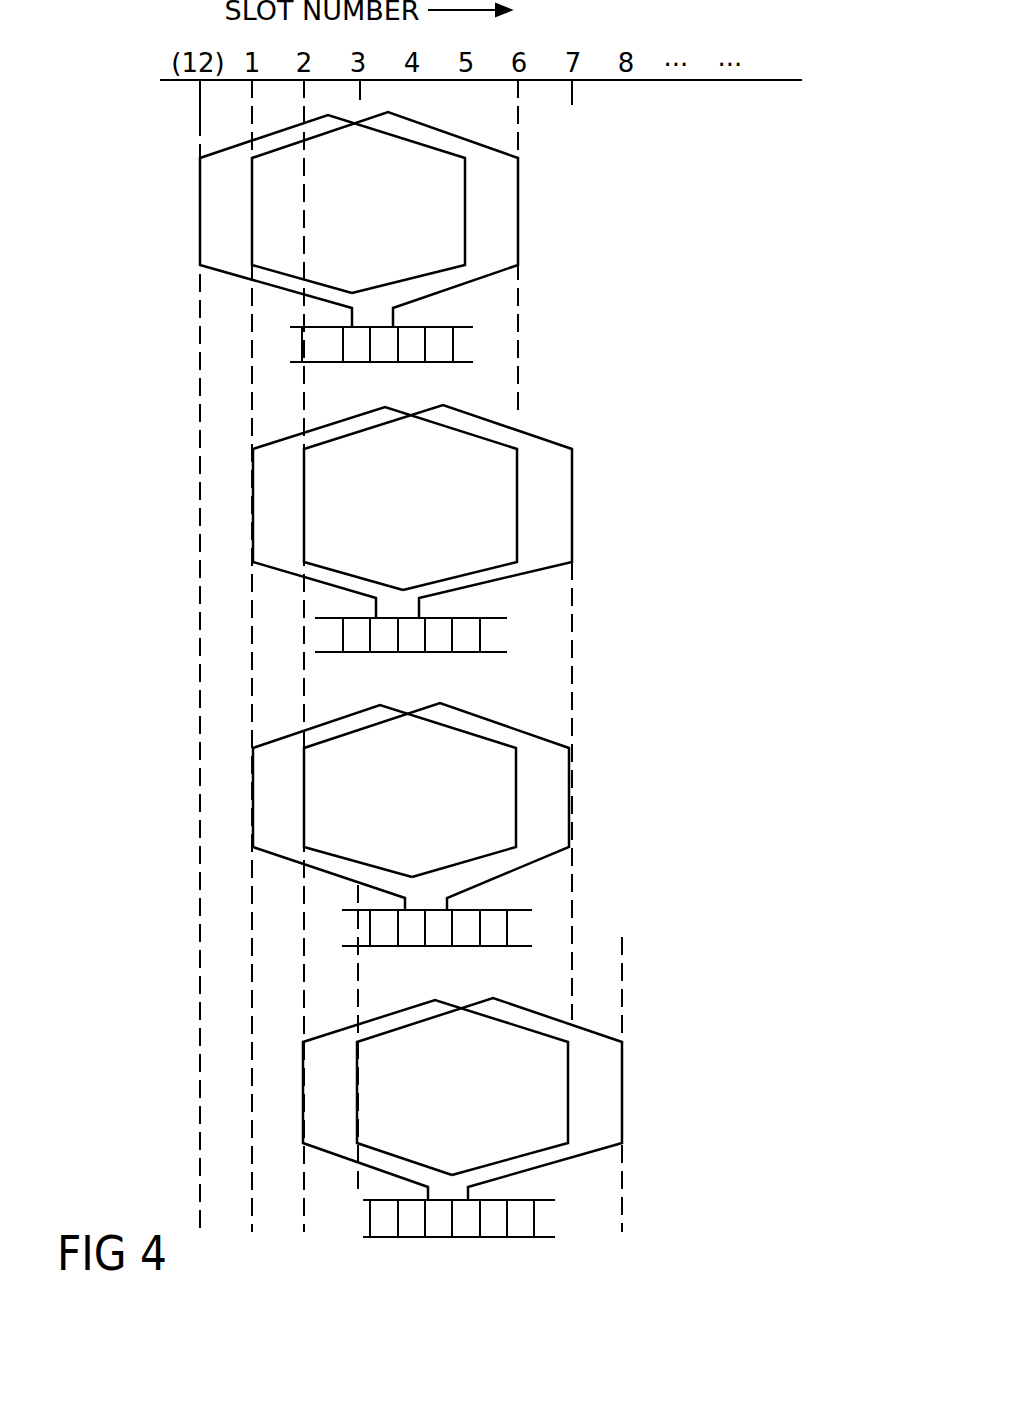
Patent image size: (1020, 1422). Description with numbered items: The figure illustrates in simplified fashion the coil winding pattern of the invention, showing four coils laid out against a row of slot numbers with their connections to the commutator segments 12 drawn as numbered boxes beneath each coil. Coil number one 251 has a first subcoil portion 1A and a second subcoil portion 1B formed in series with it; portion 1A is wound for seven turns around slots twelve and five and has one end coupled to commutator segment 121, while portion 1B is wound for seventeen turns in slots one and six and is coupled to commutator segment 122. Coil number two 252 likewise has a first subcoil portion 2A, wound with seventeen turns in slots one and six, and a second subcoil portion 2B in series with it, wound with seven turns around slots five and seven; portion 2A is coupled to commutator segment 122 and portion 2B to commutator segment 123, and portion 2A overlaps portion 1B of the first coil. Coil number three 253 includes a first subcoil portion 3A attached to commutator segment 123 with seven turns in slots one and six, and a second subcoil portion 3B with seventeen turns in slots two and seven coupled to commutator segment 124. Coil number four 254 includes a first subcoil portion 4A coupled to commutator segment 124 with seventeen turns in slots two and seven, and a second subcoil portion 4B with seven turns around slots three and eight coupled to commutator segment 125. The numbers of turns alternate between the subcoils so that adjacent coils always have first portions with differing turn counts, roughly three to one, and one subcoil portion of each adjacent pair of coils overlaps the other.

The first subcoil portion 1A is at (200, 220).
The second subcoil portion 1B is at (518, 175).
The first subcoil portion 2A is at (253, 518).
The second subcoil portion 2B is at (572, 460).
The first subcoil portion 3A is at (253, 782).
The second subcoil portion 3B is at (569, 770).
The first subcoil portion 4A is at (302, 1100).
The second subcoil portion 4B is at (622, 1050).
The commutator segments 12 is at (455, 308).
The commutator segment number 1 121 is at (358, 362).
The commutator segment number 2 122 is at (383, 362).
The commutator segment number 3 123 is at (410, 652).
The commutator segment number 4 124 is at (440, 946).
The commutator segment number 5 125 is at (460, 1237).
The coil number 1 251 is at (385, 219).
The coil number 2 252 is at (423, 511).
The coil number 3 253 is at (413, 806).
The coil number 4 254 is at (440, 1099).